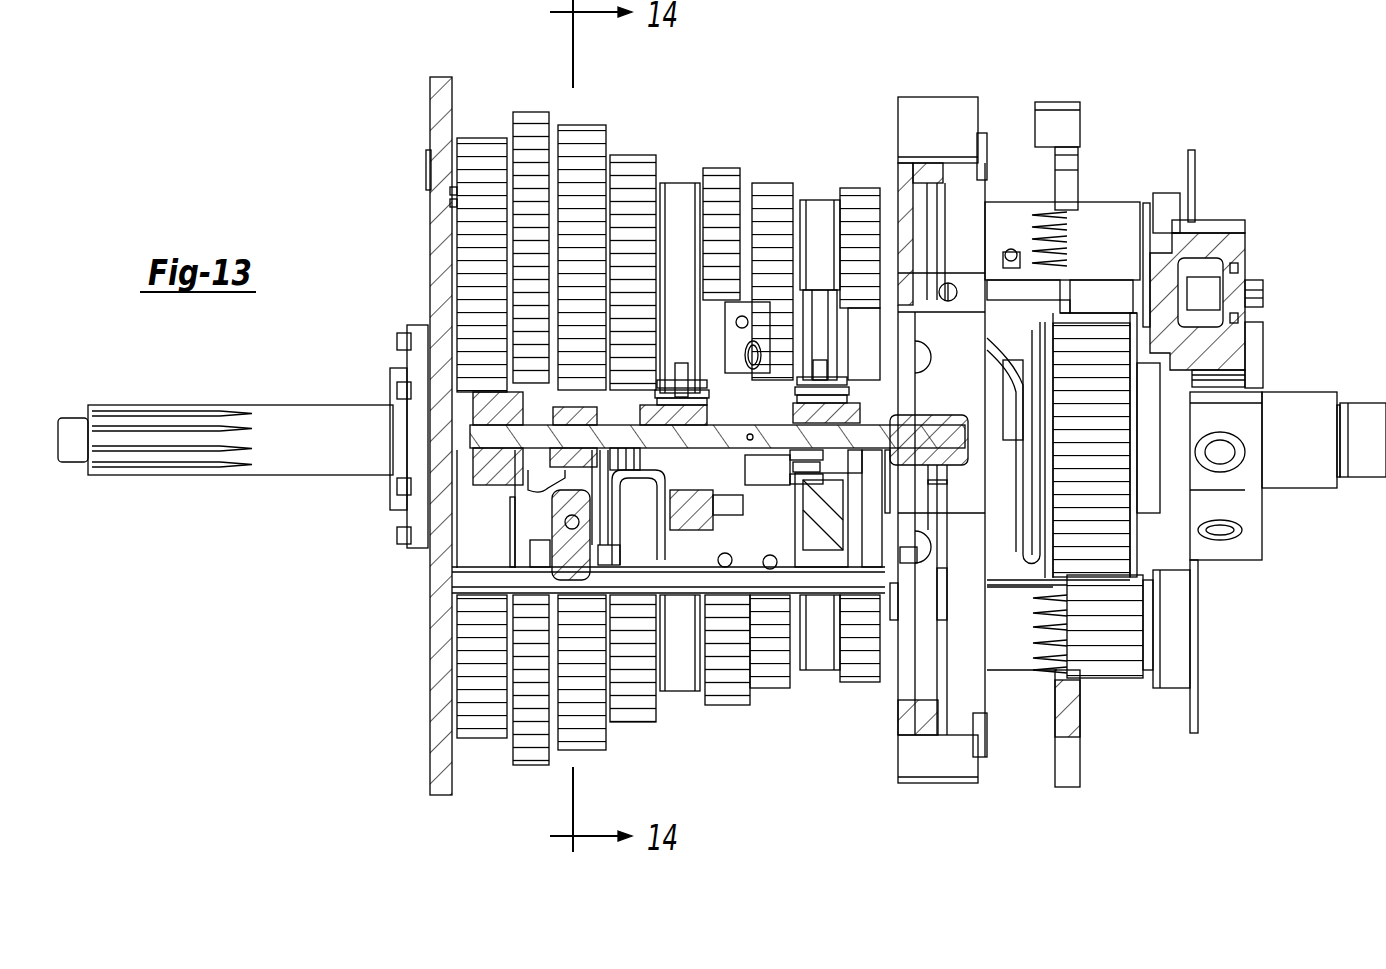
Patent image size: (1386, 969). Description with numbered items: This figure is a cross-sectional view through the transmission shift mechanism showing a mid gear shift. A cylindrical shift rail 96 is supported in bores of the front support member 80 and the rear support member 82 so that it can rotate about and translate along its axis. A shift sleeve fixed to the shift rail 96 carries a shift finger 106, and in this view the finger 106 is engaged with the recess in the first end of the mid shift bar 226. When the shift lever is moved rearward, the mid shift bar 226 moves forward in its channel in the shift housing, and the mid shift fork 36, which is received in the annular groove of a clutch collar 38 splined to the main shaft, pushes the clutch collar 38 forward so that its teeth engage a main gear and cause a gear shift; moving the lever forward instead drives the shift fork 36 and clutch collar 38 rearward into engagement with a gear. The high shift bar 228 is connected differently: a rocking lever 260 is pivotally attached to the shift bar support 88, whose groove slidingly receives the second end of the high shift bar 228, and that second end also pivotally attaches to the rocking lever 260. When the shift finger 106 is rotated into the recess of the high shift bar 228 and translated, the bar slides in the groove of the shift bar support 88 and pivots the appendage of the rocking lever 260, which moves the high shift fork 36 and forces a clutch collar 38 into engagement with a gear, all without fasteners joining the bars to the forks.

The shift fork 36 is at (583, 413).
The shift rail 96 is at (627, 437).
The clutch collar 38 is at (675, 413).
The rear support member 82 is at (912, 415).
The front support member 80 is at (492, 467).
The rocking lever 260 is at (563, 483).
The shift bar support 88 is at (560, 560).
The high shift bar 228 is at (607, 553).
The mid shift bar 226 is at (735, 505).
The shift finger 106 is at (763, 470).